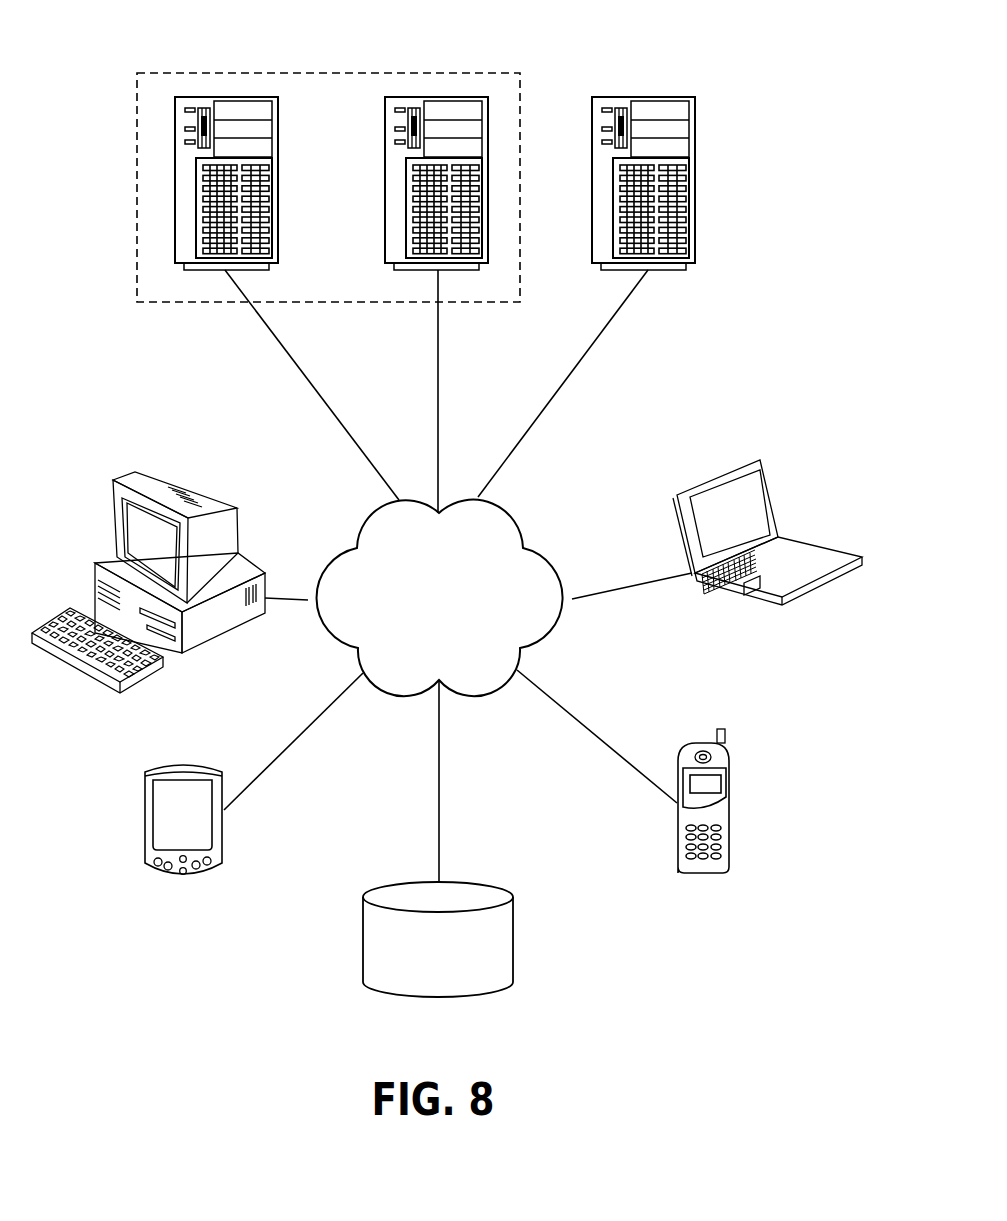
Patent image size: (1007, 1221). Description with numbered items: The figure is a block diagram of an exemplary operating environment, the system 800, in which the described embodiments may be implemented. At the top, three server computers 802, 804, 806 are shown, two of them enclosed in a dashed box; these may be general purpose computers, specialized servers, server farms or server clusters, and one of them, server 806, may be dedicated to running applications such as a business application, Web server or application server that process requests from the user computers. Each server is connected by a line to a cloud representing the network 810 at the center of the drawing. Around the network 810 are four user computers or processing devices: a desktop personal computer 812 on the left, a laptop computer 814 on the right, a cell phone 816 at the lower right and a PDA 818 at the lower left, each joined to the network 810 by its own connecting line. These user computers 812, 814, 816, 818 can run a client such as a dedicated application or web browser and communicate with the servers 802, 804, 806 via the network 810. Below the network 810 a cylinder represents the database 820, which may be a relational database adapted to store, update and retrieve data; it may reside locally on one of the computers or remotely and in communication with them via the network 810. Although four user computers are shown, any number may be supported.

The system 800 is at (781, 112).
The server computer 802 is at (207, 97).
The server computer 804 is at (447, 97).
The server computer 806 is at (695, 177).
The network 810 is at (425, 630).
The user computer 812 is at (160, 478).
The user computer 814 is at (730, 468).
The user computer 816 is at (702, 873).
The user computer 818 is at (180, 877).
The database 820 is at (455, 976).